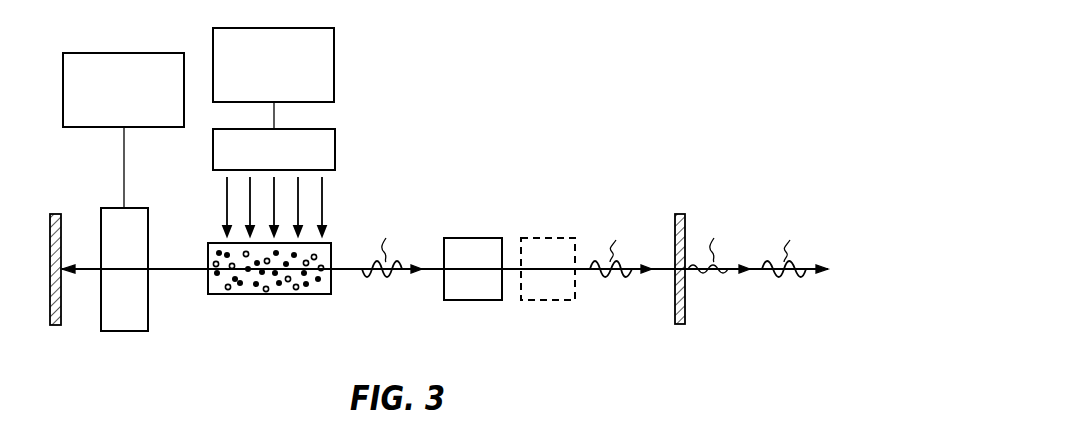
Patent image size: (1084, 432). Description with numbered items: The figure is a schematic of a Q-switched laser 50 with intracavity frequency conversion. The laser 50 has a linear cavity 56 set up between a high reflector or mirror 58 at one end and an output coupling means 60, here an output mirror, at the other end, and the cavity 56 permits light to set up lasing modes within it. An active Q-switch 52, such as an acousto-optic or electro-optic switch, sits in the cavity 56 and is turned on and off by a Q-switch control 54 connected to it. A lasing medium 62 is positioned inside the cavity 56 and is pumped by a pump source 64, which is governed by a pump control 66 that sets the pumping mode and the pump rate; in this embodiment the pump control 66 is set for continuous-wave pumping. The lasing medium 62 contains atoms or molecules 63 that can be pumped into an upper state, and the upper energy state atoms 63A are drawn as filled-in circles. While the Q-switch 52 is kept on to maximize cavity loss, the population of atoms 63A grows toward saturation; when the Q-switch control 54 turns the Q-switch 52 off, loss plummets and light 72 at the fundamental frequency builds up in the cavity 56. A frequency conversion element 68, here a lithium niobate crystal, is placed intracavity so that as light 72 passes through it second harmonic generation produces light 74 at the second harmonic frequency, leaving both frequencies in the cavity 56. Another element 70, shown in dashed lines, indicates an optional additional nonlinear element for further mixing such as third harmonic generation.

The Q-switched laser 50 is at (549, 97).
The Q-switch 52 is at (136, 331).
The Q-switch control 54 is at (157, 53).
The cavity 56 is at (450, 170).
The high reflector or mirror 58 is at (62, 222).
The output coupling means 60 is at (681, 214).
The lasing medium 62 is at (210, 248).
The atoms or molecules 63 is at (228, 302).
The upper energy state atoms 63A is at (306, 286).
The pump source 64 is at (335, 152).
The pump control 66 is at (334, 67).
The frequency conversion element 68 is at (450, 300).
The additional frequency conversion element 70 is at (548, 238).
The light at the fundamental frequency 72 is at (396, 276).
The light at second harmonic frequency 74 is at (612, 278).